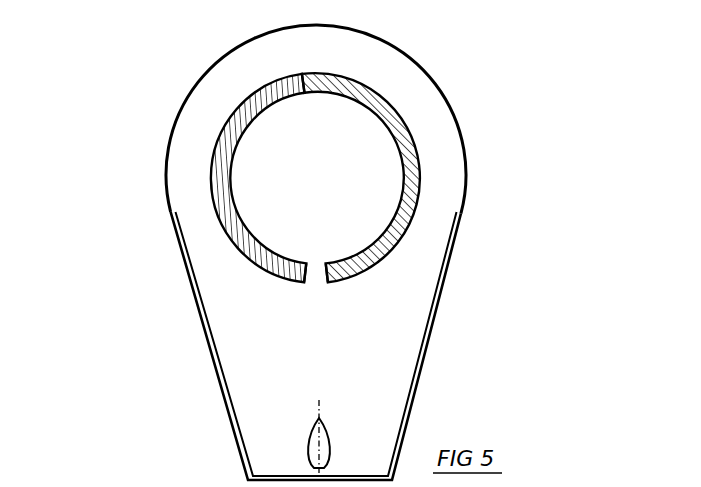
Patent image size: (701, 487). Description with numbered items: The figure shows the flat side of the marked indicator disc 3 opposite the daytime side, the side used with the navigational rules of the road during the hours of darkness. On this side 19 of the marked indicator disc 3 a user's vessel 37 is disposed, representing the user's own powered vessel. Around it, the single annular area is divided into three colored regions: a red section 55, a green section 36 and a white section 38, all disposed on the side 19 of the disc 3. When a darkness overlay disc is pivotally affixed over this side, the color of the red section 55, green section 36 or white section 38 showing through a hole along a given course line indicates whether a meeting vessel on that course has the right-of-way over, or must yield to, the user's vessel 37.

The marked indicator disc 3 is at (398, 297).
The side of the marked indicator disc 19 is at (377, 408).
The green section 36 is at (410, 162).
The red section 55 is at (213, 165).
The user's vessel 37 is at (312, 439).
The white section 38 is at (320, 278).